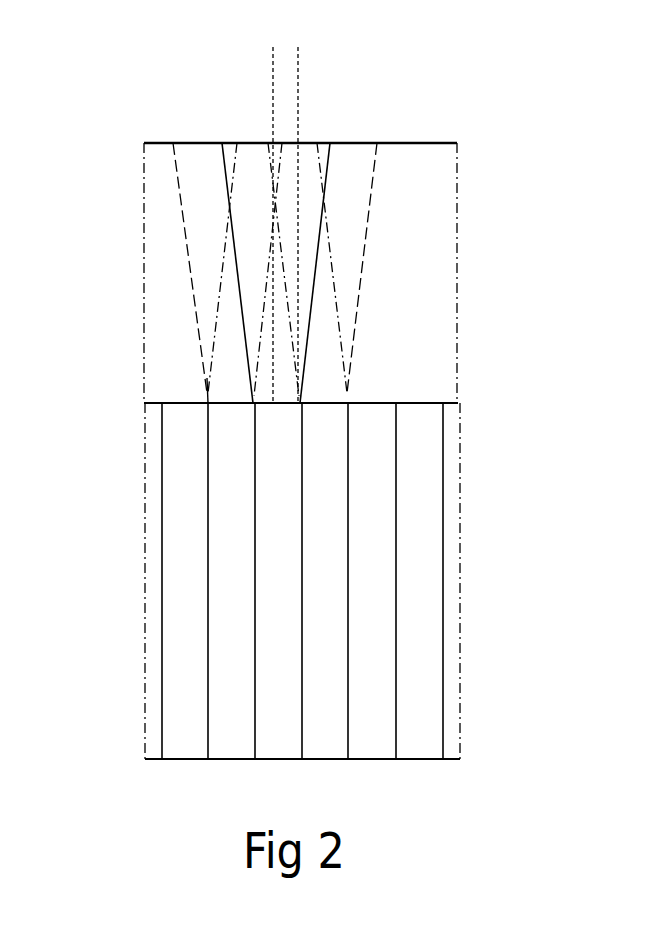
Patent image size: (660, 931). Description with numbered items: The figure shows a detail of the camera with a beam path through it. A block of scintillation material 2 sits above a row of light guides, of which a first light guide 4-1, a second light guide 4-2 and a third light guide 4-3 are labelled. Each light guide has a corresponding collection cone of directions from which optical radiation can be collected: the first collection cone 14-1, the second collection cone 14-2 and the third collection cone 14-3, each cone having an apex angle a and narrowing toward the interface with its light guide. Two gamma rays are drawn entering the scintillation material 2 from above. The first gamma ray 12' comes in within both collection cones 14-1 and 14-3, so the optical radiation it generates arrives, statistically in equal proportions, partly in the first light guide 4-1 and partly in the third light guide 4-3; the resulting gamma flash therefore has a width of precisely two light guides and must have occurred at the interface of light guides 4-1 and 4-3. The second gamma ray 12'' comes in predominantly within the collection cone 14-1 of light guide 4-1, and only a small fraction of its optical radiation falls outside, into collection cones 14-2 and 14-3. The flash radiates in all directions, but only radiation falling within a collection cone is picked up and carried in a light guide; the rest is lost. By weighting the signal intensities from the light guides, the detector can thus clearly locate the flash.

The scintillation material 2 is at (420, 232).
The second gamma ray 12'' is at (154, 225).
The first gamma ray 12' is at (434, 225).
The first collection cone 14-1 is at (268, 340).
The second collection cone 14-2 is at (227, 372).
The third collection cone 14-3 is at (330, 362).
The apex angle a is at (207, 373).
The first light guide 4-1 is at (280, 505).
The second light guide 4-2 is at (232, 552).
The third light guide 4-3 is at (328, 577).